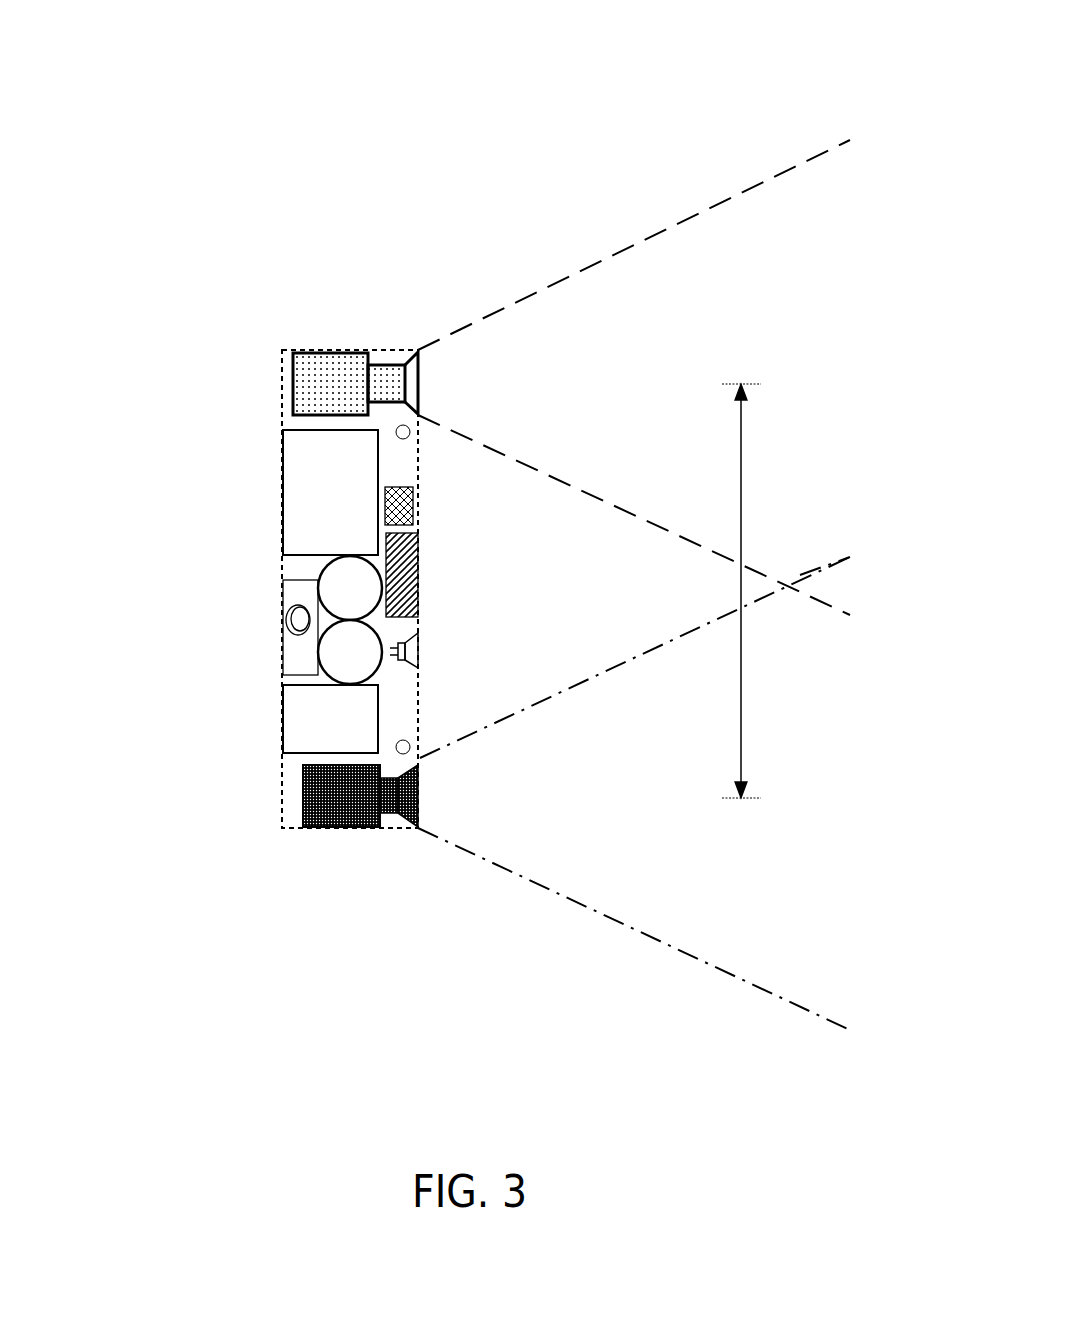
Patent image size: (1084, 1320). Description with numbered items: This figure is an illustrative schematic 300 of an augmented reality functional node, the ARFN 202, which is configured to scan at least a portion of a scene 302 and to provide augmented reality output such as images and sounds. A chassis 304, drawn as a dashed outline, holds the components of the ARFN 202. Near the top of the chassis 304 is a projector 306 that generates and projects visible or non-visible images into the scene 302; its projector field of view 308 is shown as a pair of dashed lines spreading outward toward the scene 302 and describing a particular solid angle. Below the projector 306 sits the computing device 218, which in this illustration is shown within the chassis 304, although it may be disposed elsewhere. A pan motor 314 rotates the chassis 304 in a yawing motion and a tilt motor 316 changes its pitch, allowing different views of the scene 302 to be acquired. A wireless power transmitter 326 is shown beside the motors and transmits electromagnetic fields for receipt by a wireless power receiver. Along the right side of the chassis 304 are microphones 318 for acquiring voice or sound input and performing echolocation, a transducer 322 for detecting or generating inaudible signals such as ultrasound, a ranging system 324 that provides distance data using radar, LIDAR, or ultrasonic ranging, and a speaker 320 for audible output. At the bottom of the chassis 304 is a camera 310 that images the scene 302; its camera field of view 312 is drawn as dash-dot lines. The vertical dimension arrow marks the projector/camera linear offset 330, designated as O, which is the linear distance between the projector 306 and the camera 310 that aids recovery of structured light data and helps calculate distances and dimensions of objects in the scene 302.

The illustrative schematic 300 is at (779, 56).
The ARFN 202 is at (289, 322).
The chassis 304 is at (353, 352).
The projector 306 is at (330, 382).
The computing device 218 is at (330, 495).
The projector field of view 308 is at (632, 236).
The microphones 318 is at (408, 430).
The transducer 322 is at (400, 507).
The ranging system 324 is at (416, 568).
The pan motor 314 is at (325, 572).
The wireless power transmitter 326 is at (292, 620).
The tilt motor 316 is at (328, 657).
The speakers 320 is at (418, 652).
The camera 310 is at (340, 800).
The camera field of view 312 is at (582, 917).
The scene 302 is at (860, 585).
The projector/camera linear offset 330 is at (739, 650).